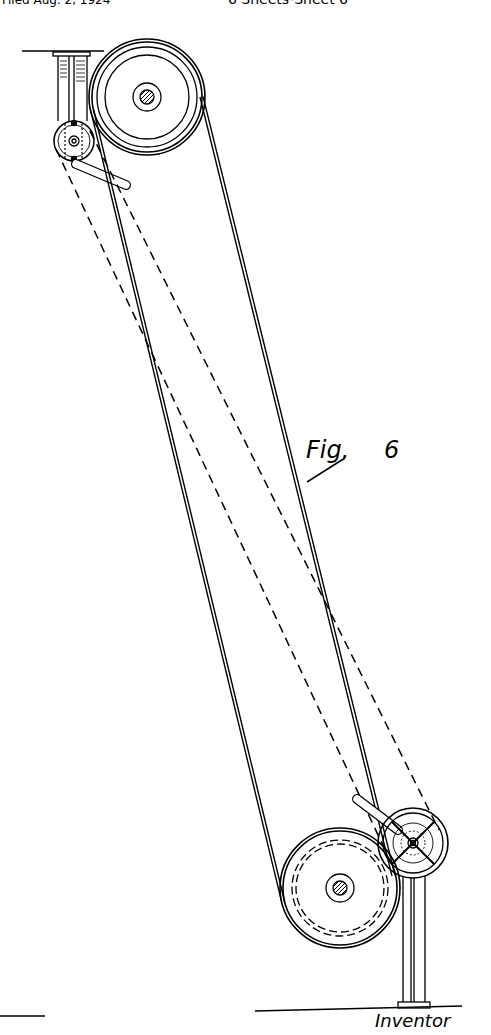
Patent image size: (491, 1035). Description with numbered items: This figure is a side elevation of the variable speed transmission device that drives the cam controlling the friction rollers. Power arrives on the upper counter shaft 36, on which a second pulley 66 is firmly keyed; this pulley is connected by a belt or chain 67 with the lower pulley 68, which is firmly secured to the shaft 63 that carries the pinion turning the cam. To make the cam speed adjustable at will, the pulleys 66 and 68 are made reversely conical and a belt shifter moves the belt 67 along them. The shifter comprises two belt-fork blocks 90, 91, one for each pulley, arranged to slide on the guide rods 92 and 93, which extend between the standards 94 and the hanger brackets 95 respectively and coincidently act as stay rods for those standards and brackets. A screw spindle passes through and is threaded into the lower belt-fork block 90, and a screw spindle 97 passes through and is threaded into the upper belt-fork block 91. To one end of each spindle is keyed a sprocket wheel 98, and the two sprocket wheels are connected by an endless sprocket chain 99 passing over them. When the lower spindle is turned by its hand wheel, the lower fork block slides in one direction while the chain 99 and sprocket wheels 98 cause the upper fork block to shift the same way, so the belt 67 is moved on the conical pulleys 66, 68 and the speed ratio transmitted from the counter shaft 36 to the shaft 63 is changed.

The upper counter shaft 36 is at (146, 90).
The shaft 63 is at (340, 881).
The second pulley 66 is at (147, 97).
The belt or chain 67 is at (219, 630).
The lower pulley 68 is at (340, 888).
The belt-fork block 90 is at (355, 799).
The belt-fork block 91 is at (92, 176).
The guide rod 92 is at (415, 833).
The guide rod 93 is at (71, 122).
The standards 94 is at (426, 929).
The hanger brackets 95 is at (60, 69).
The screw spindle 97 is at (71, 143).
The sprocket wheel 98 is at (54, 137).
The endless sprocket chain 99 is at (295, 647).